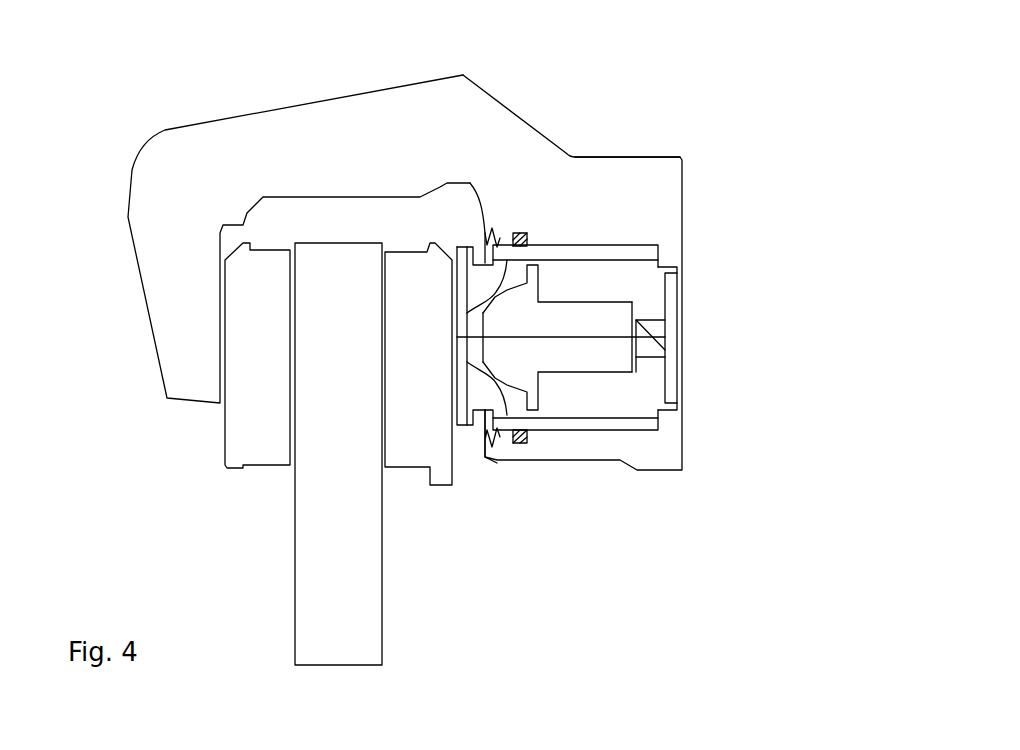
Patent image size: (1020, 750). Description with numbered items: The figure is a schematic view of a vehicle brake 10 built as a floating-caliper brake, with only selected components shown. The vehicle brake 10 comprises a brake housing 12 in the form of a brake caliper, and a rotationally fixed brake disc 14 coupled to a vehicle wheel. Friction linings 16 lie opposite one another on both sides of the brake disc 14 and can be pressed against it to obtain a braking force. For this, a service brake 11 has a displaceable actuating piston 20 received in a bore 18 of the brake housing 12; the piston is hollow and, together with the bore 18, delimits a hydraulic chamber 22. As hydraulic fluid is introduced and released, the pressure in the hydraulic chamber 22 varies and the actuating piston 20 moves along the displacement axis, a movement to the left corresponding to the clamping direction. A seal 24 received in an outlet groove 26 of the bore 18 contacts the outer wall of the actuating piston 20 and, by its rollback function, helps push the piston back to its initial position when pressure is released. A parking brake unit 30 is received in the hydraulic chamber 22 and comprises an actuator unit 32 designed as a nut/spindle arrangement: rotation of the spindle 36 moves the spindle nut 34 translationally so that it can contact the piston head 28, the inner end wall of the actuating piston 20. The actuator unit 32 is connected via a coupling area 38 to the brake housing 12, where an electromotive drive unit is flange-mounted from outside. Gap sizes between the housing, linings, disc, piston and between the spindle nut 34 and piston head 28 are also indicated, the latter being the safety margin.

The vehicle brake 10 is at (705, 95).
The service brake 11 is at (720, 242).
The brake housing 12 is at (628, 225).
The brake disc 14 is at (338, 470).
The friction linings 16 is at (255, 398).
The bore 18 is at (497, 228).
The actuating piston 20 is at (542, 420).
The hydraulic chamber 22 is at (590, 393).
The seal 24 is at (527, 243).
The outlet groove 26 is at (520, 230).
The piston head 28 is at (474, 360).
The parking brake unit 30 is at (726, 287).
The actuator unit 32 is at (650, 370).
The spindle nut 34 is at (587, 362).
The spindle 36 is at (660, 347).
The coupling area 38 is at (668, 312).